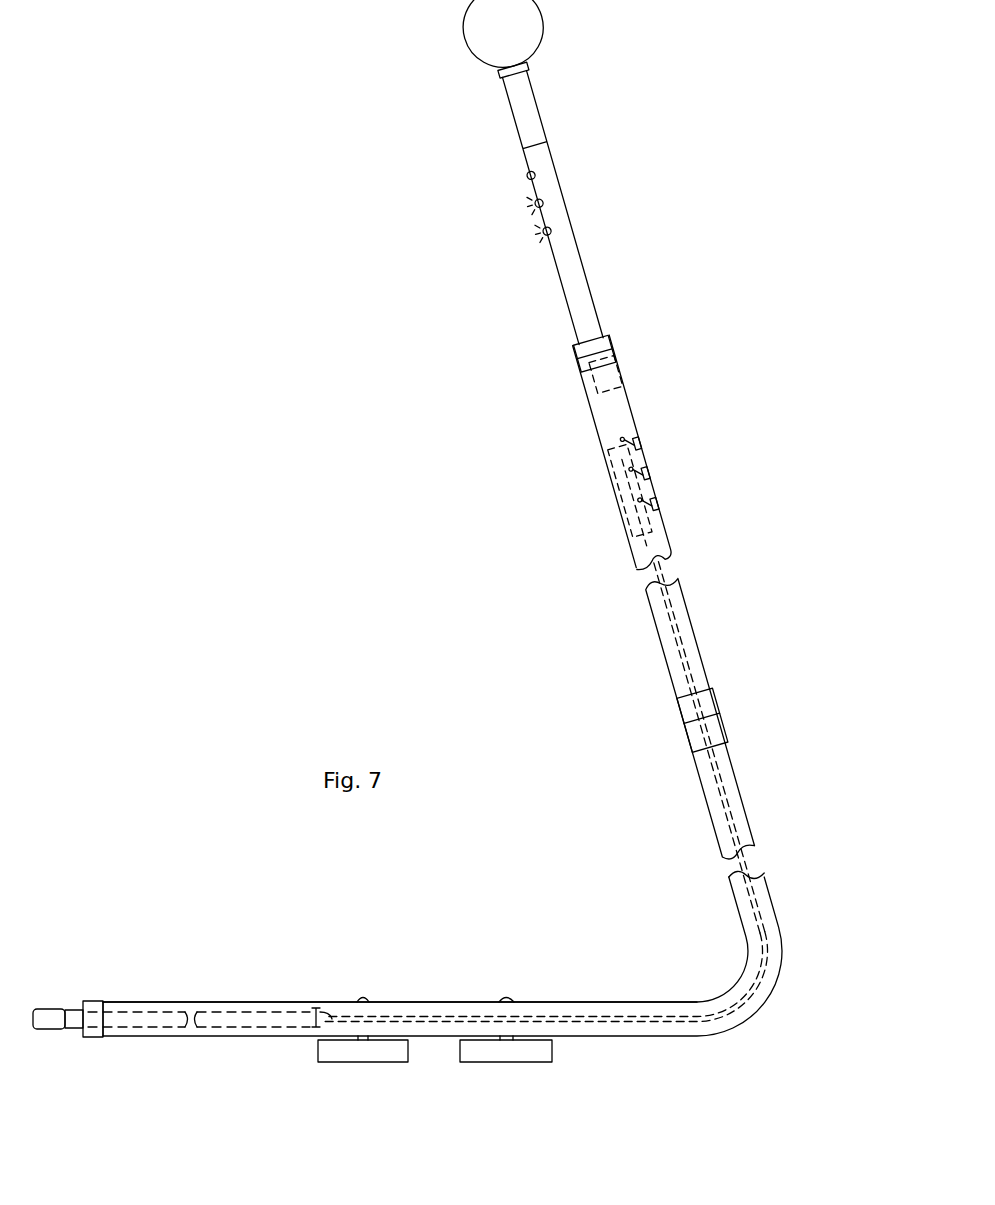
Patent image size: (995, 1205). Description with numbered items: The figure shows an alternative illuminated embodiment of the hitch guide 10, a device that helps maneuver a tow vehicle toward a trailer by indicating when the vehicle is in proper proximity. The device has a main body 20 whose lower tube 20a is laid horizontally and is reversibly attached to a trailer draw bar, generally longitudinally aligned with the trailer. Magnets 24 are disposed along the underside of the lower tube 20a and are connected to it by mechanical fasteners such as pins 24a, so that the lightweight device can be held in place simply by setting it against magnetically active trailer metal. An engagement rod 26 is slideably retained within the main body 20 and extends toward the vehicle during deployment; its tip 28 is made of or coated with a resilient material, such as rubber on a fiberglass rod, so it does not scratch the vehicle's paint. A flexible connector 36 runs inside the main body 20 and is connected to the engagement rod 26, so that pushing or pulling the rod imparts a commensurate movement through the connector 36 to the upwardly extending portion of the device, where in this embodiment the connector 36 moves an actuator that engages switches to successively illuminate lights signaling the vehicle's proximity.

The hitch guide 10 is at (383, 354).
The main body 20 is at (291, 984).
The lower tube 20a is at (568, 1000).
The flexible connector 36 is at (633, 1018).
The magnets 24 is at (382, 1052).
The pins 24a is at (363, 998).
The engagement rod 26 is at (72, 1018).
The tip 28 is at (45, 1012).